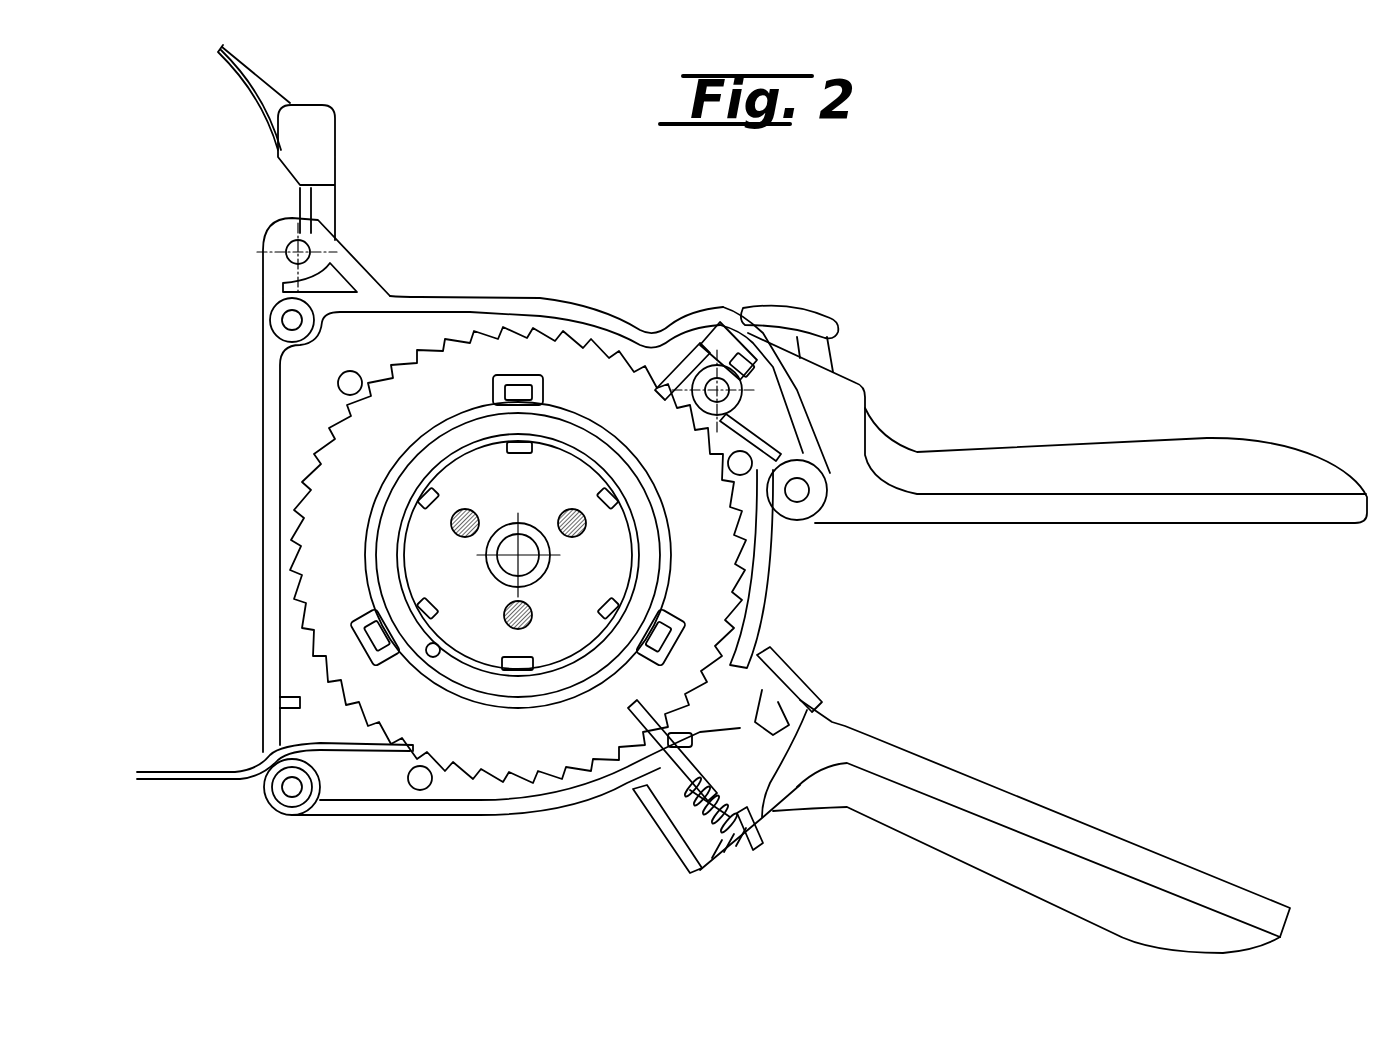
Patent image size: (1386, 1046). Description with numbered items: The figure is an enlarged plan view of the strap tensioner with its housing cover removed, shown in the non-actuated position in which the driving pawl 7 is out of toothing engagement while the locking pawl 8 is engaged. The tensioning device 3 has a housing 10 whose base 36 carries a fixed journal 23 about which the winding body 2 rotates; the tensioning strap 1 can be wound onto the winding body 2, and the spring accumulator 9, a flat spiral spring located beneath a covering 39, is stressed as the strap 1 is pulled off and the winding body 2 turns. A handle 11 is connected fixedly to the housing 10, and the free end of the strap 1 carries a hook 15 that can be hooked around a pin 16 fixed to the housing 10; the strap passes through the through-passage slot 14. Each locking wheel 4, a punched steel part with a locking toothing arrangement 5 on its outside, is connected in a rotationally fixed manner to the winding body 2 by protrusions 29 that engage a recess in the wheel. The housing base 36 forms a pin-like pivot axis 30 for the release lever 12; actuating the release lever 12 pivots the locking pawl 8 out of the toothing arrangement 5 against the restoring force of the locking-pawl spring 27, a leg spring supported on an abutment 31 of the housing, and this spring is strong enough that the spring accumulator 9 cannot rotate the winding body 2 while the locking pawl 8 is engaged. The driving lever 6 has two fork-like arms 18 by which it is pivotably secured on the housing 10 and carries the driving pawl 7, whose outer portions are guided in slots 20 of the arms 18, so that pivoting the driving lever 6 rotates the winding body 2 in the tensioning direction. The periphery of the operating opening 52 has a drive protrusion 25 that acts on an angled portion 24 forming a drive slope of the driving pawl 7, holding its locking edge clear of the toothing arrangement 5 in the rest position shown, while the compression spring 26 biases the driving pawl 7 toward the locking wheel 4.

The tensioning strap 1 is at (227, 57).
The winding body 2 is at (469, 452).
The tensioning device 3 is at (505, 466).
The locking wheel 4 is at (350, 452).
The locking toothing arrangement 5 is at (657, 380).
The driving lever 6 is at (1148, 885).
The driving pawl 7 is at (688, 770).
The locking pawl 8 is at (700, 347).
The spring accumulator 9 is at (458, 525).
The housing 10 is at (600, 323).
The handle 11 is at (1150, 452).
The release lever 12 is at (830, 325).
The through-passage slot 14 is at (260, 770).
The hook 15 is at (315, 130).
The pin 16 is at (293, 248).
The arms 18 is at (737, 737).
The slots 20 is at (680, 773).
The journal 23 is at (527, 563).
The angled portion 24 is at (690, 745).
The drive protrusion 25 is at (687, 732).
The compression spring 26 is at (737, 818).
The locking-pawl spring 27 is at (748, 436).
The protrusions 29 is at (517, 388).
The pivot axis 30 is at (742, 362).
The abutment 31 is at (767, 460).
The base 36 is at (297, 383).
The covering 39 is at (537, 483).
The operating opening 52 is at (723, 697).